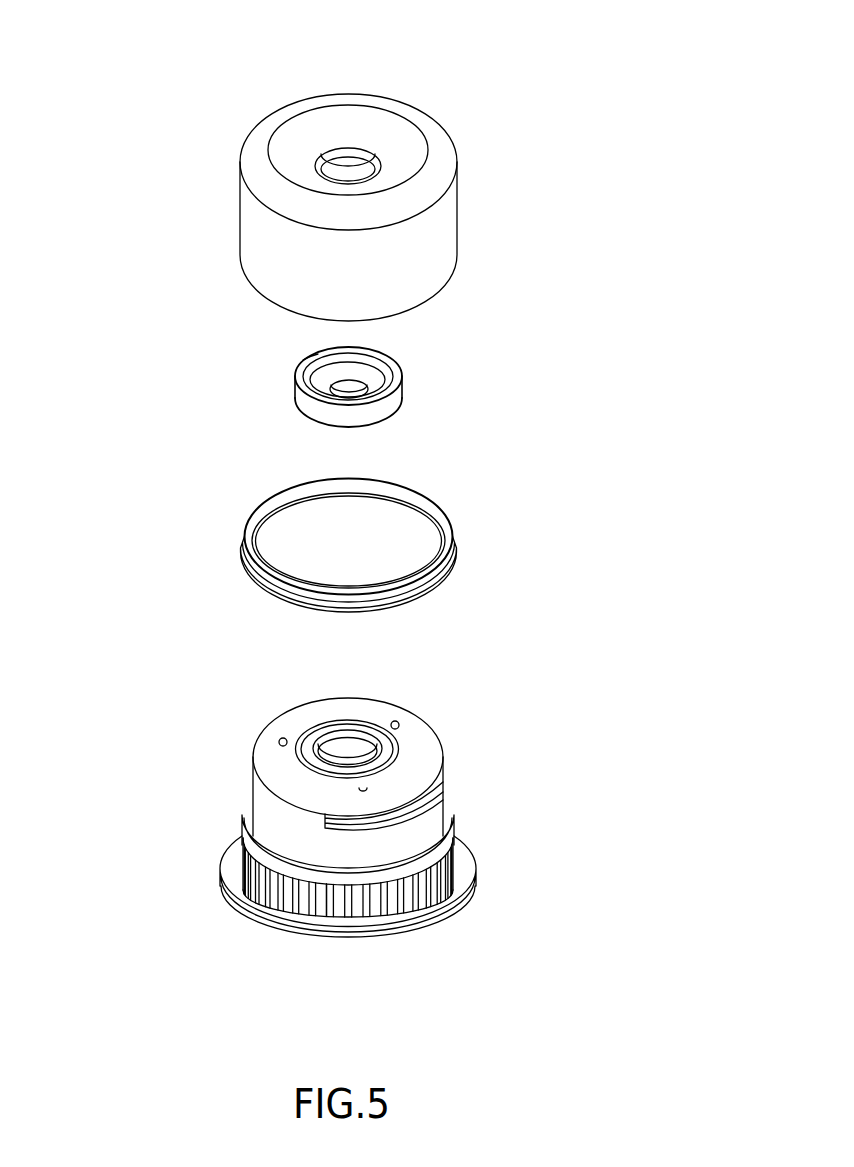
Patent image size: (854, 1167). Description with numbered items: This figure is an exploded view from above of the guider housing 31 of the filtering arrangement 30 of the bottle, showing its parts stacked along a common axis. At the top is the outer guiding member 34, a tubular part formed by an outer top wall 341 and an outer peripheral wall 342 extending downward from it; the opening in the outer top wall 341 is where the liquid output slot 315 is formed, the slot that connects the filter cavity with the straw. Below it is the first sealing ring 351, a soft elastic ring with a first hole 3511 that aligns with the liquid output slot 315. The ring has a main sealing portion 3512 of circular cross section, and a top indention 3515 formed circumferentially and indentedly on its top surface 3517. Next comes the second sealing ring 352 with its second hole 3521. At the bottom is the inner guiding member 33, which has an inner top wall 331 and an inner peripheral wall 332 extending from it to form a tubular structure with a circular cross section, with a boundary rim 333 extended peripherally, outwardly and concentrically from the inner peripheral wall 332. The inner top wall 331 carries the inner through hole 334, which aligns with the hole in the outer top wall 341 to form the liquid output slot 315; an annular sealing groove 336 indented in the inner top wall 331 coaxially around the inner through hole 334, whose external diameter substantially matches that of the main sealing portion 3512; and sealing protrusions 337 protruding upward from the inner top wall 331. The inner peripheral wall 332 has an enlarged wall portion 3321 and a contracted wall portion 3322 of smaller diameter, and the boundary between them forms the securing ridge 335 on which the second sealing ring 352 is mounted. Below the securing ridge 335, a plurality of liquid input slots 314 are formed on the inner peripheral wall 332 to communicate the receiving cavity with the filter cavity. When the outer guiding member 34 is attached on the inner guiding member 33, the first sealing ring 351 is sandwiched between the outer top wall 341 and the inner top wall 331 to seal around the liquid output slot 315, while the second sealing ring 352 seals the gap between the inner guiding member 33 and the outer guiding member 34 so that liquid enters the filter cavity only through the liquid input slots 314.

The filtering arrangement 30 is at (220, 209).
The guider housing 31 is at (443, 92).
The outer guiding member 34 is at (447, 220).
The outer top wall 341 is at (290, 148).
The outer peripheral wall 342 is at (393, 282).
The liquid output slot 315 is at (338, 170).
The first sealing ring 351 is at (394, 393).
The first hole 3511 is at (335, 390).
The main sealing portion 3512 is at (388, 348).
The top indention 3515 is at (383, 378).
The top surface 3517 is at (310, 348).
The second sealing ring 352 is at (448, 538).
The second hole 3521 is at (292, 538).
The inner guiding member 33 is at (258, 803).
The inner top wall 331 is at (377, 711).
The inner peripheral wall 332 is at (452, 814).
The boundary rim 333 is at (462, 912).
The inner through hole 334 is at (318, 742).
The securing ridge 335 is at (396, 857).
The sealing groove 336 is at (395, 749).
The sealing protrusion 337 is at (350, 722).
The enlarged wall portion 3321 is at (252, 895).
The contracted wall portion 3322 is at (333, 866).
The liquid input slots 314 is at (455, 861).